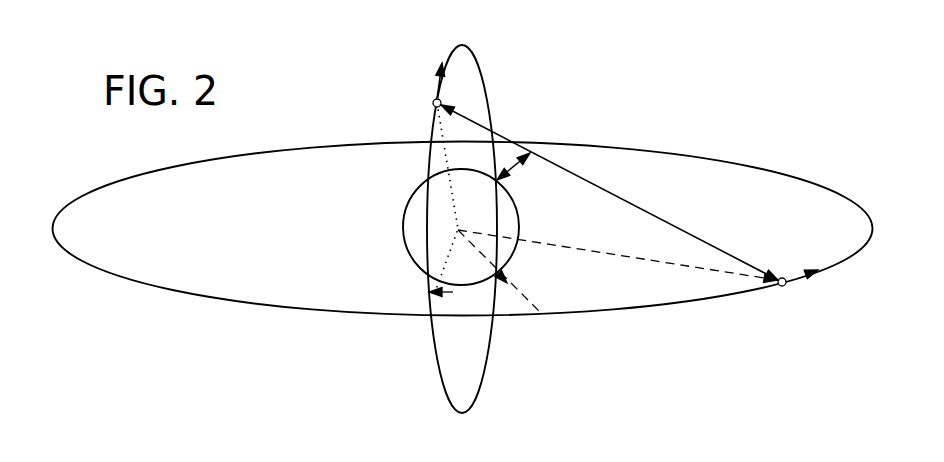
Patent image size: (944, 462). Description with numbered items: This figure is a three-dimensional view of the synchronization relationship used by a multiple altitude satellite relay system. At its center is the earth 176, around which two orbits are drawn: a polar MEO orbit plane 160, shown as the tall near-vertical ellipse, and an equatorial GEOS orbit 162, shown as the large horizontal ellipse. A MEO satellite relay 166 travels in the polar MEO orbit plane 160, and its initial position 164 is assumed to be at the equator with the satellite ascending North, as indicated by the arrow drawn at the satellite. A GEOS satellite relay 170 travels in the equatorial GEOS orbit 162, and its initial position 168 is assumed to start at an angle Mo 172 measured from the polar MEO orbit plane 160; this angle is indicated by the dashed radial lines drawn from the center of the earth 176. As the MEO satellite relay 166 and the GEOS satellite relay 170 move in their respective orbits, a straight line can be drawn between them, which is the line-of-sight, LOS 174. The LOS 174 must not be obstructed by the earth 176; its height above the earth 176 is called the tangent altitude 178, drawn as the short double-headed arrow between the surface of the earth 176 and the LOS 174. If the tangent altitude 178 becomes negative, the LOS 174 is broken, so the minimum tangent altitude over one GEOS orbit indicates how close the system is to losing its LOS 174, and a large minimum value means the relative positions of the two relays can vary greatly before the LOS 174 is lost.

The polar MEO orbit plane 160 is at (483, 60).
The equatorial GEOS orbit 162 is at (832, 272).
The initial position of the MEO satellite relay 164 is at (415, 298).
The MEO satellite relay 166 is at (433, 102).
The initial position of the GEOS satellite relay 168 is at (546, 328).
The GEOS satellite relay 170 is at (781, 287).
The angle Mo 172 is at (466, 307).
The line-of-sight (LOS) 174 is at (636, 192).
The earth 176 is at (390, 243).
The tangent altitude 178 is at (514, 166).